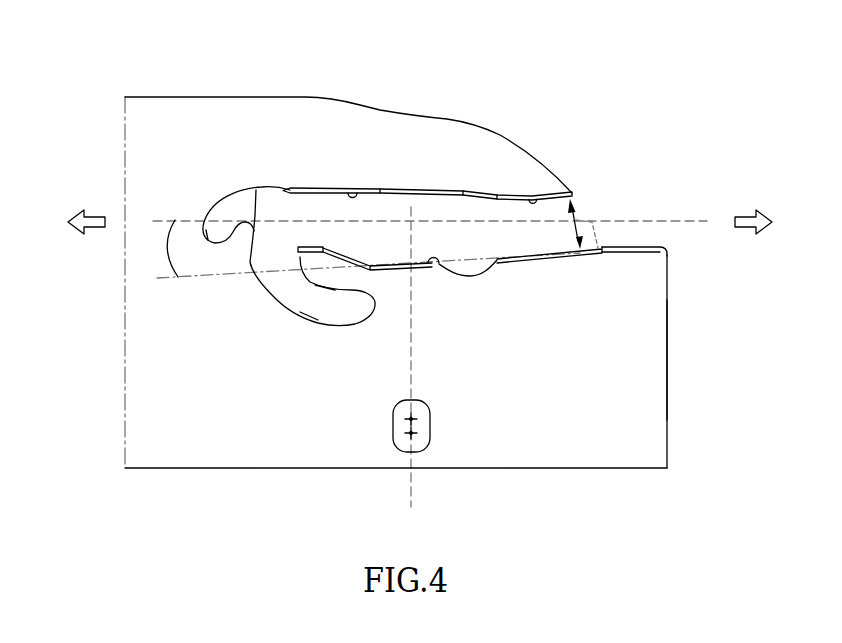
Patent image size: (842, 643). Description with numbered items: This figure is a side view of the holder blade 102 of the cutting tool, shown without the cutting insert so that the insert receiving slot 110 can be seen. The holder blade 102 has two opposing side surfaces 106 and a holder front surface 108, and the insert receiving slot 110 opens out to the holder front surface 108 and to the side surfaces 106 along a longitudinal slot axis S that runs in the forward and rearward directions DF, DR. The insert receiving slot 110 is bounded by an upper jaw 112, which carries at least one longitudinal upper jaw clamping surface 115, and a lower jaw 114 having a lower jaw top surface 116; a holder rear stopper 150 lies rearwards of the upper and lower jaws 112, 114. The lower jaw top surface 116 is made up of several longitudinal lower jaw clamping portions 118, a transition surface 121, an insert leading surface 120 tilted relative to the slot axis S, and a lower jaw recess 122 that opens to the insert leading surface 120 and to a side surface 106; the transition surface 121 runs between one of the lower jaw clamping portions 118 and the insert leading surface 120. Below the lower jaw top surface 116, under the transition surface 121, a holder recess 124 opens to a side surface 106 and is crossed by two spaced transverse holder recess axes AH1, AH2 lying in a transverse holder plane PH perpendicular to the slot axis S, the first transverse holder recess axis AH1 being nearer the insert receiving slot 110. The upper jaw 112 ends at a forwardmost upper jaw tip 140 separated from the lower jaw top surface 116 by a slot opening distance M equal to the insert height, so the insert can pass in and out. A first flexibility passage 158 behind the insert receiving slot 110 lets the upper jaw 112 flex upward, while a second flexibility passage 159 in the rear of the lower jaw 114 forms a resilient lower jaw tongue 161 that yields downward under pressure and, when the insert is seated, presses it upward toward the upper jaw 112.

The holder blade 102 is at (434, 279).
The side surfaces 106 is at (307, 452).
The holder front surface 108 is at (668, 372).
The insert receiving slot 110 is at (594, 198).
The upper jaw 112 is at (440, 135).
The lower jaw 114 is at (660, 301).
The upper jaw clamping surface 115 is at (347, 188).
The lower jaw top surface 116 is at (606, 230).
The lower jaw clamping portions 118 is at (315, 247).
The insert leading surface 120 is at (428, 263).
The transition surface 121 is at (365, 258).
The lower jaw recess 122 is at (506, 233).
The holder recess 124 is at (423, 437).
The upper jaw tip 140 is at (451, 154).
The holder rear stopper 150 is at (282, 262).
The first flexibility passage 158 is at (211, 247).
The second flexibility passage 159 is at (322, 317).
The lower jaw tongue 161 is at (337, 277).
The first transverse holder recess axis AH1 is at (413, 418).
The second transverse holder recess axis AH2 is at (413, 434).
The transverse holder plane PH is at (428, 358).
The slot axis S is at (430, 210).
The slot opening distance M is at (575, 224).
The rearward direction DR is at (86, 240).
The forward direction DF is at (758, 236).